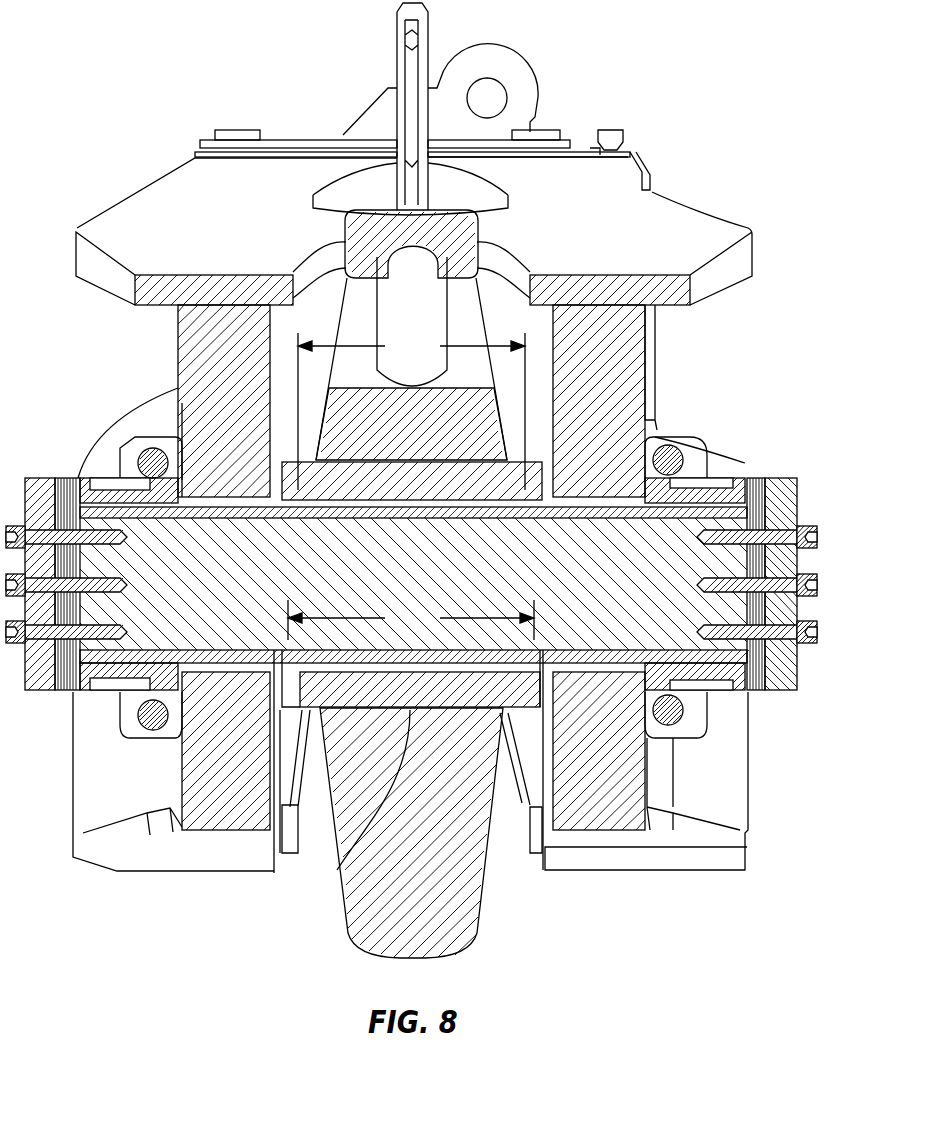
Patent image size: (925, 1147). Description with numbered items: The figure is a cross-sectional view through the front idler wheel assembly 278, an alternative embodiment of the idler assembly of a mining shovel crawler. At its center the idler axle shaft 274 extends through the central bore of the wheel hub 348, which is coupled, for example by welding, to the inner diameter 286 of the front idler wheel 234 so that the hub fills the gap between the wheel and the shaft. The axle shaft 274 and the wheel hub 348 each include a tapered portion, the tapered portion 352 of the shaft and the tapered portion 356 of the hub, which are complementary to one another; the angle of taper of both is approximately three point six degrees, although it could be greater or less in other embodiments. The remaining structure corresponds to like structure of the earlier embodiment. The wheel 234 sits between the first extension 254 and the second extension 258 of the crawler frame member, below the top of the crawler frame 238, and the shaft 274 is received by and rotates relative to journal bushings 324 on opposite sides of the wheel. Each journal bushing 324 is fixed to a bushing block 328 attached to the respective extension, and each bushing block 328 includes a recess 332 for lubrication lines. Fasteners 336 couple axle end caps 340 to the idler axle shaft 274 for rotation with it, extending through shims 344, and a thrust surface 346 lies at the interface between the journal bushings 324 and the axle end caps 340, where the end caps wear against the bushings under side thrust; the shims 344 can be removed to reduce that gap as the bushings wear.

The front idler wheel assembly 278 is at (119, 121).
The top of the crawler frame 238 is at (238, 178).
The tapered portion of the wheel hub 356 is at (411, 410).
The wheel hub 348 is at (382, 485).
The idler axle shaft 274 is at (177, 560).
The bushing block 328 is at (660, 452).
The recess 332 is at (710, 485).
The journal bushing 324 is at (753, 493).
The axle end cap 340 is at (780, 493).
The fastener 336 is at (793, 538).
The shim 344 is at (762, 607).
The thrust surface 346 is at (763, 693).
The first extension 254 is at (202, 795).
The second extension 258 is at (623, 808).
The inner diameter of the wheel 286 is at (340, 840).
The front idler wheel 234 is at (447, 858).
The tapered portion of the idler axle shaft 352 is at (411, 620).